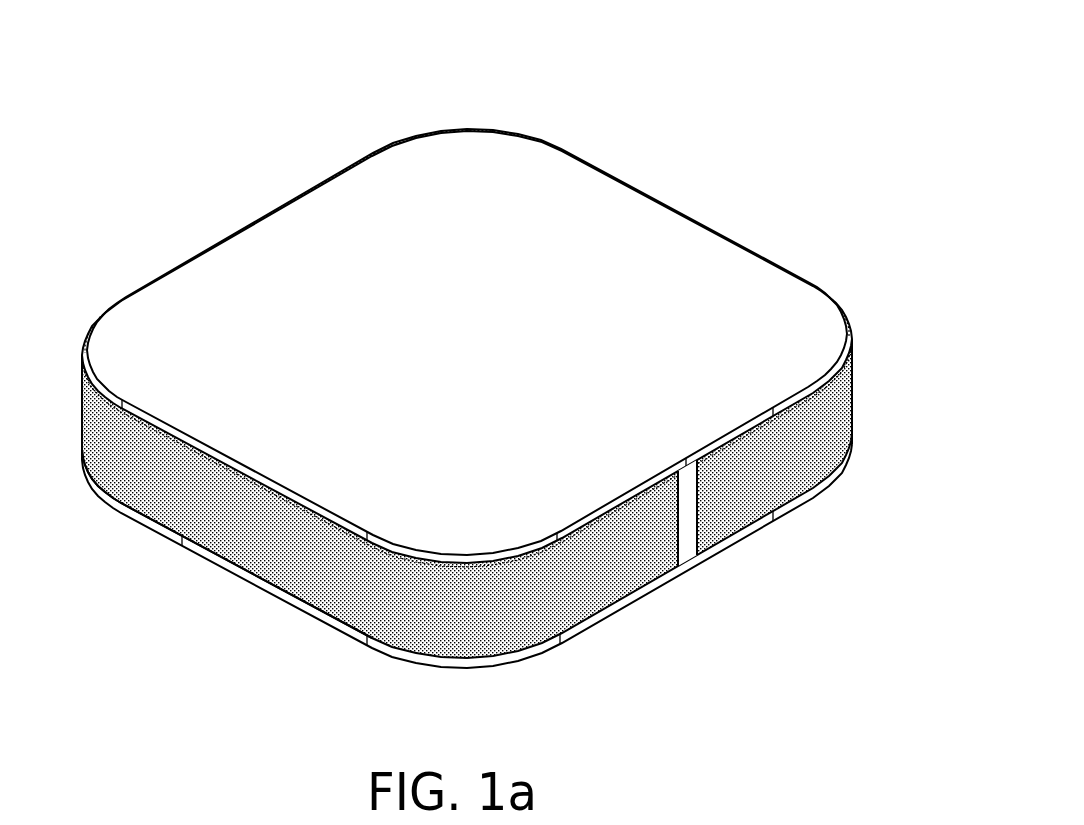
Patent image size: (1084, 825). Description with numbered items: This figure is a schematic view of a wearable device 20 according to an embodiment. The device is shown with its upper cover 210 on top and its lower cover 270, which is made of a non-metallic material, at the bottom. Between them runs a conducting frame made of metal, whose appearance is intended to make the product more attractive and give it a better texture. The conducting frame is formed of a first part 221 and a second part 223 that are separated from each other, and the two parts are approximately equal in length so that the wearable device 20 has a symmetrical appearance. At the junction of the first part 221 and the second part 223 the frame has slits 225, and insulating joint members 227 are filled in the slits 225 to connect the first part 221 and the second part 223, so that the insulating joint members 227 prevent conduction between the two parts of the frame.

The wearable device 20 is at (504, 400).
The upper cover 210 is at (574, 190).
The first part 221 is at (847, 398).
The second part 223 is at (247, 537).
The slits 225 is at (251, 216).
The insulating joint members 227 is at (247, 221).
The lower cover 270 is at (531, 653).